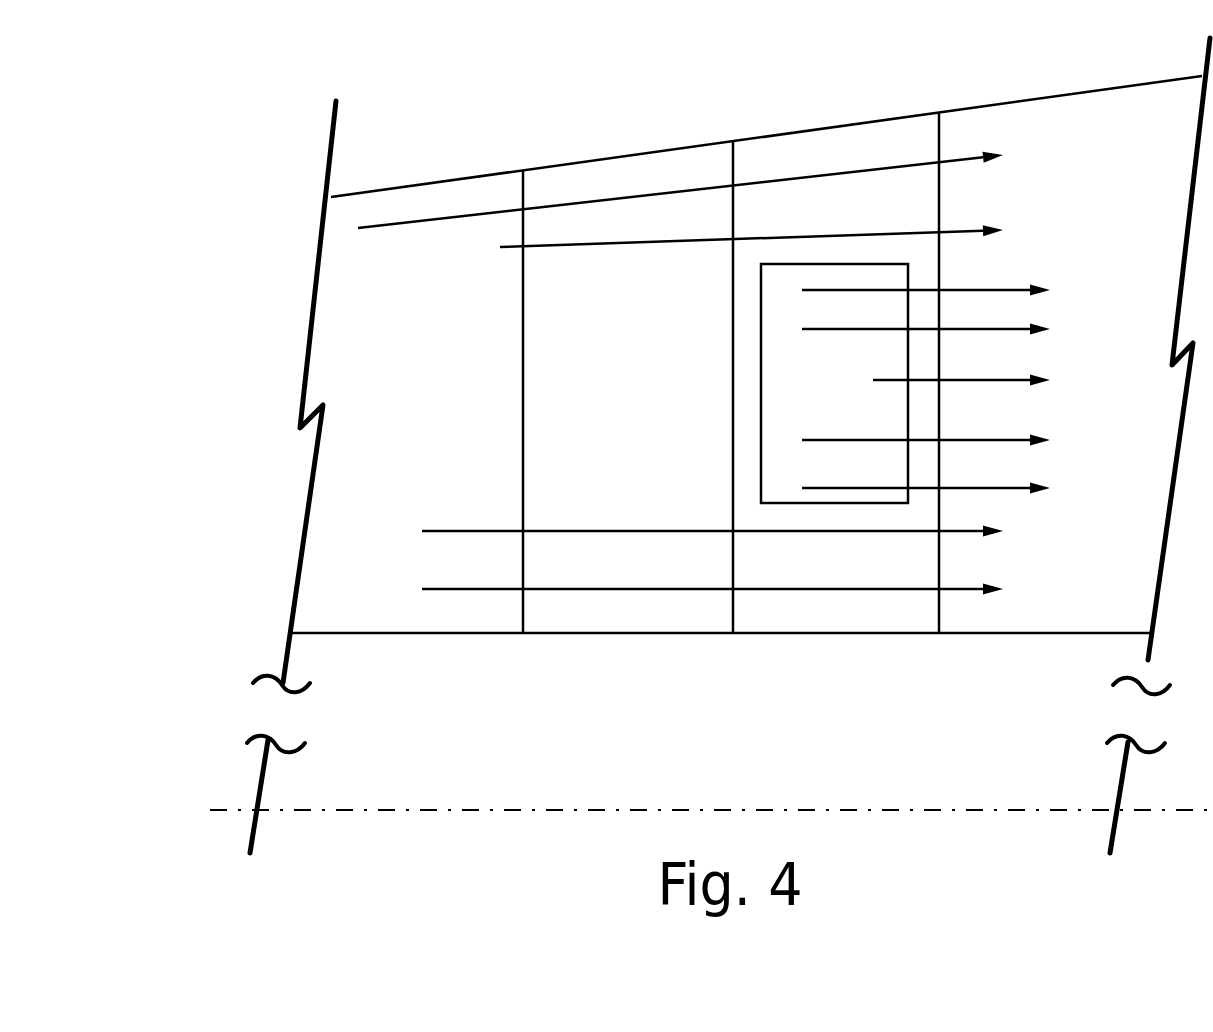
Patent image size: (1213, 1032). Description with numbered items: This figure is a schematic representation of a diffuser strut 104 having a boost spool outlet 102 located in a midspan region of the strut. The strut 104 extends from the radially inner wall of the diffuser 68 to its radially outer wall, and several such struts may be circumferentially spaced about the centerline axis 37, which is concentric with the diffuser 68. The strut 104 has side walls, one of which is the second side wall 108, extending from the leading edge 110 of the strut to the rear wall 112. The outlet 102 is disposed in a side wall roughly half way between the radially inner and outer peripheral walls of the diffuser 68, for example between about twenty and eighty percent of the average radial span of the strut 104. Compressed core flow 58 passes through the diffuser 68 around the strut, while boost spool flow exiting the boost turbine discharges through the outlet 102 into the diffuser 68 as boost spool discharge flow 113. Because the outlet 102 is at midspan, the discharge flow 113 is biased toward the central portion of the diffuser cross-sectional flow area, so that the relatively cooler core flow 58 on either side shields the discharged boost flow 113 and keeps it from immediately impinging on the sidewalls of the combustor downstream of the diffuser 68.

The centerline axis 37 is at (240, 810).
The core flow 58 is at (1047, 125).
The diffuser 68 is at (399, 402).
The outlet 102 is at (840, 396).
The diffuser strut 104 is at (668, 151).
The second side wall 108 is at (607, 400).
The leading edge 110 is at (523, 317).
The rear wall 112 is at (939, 550).
The boost spool discharge flow 113 is at (1075, 273).